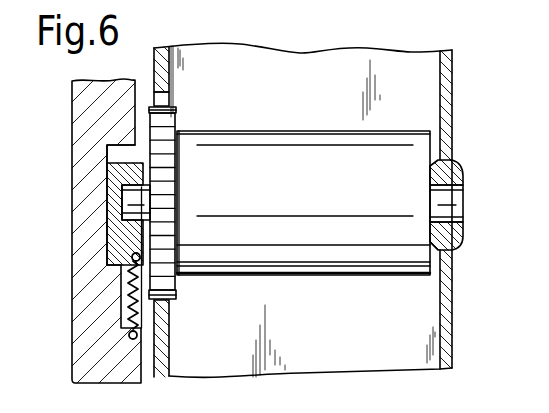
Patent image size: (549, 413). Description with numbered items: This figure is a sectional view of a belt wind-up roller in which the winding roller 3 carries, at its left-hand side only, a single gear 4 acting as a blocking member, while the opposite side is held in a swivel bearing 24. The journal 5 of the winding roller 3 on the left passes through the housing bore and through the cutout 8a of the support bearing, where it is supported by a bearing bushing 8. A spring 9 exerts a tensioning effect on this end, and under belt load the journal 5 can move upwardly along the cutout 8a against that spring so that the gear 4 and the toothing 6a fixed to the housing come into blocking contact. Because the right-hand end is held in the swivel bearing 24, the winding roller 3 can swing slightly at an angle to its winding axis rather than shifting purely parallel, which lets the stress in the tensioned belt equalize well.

The winding roller 3 is at (342, 258).
The gear 4 is at (172, 287).
The journal 5 is at (127, 203).
The teeth 6a is at (165, 98).
The bearing bushing 8 is at (108, 174).
The cutout 8a is at (115, 155).
The spring 9 is at (140, 311).
The swivel bearing 24 is at (463, 235).